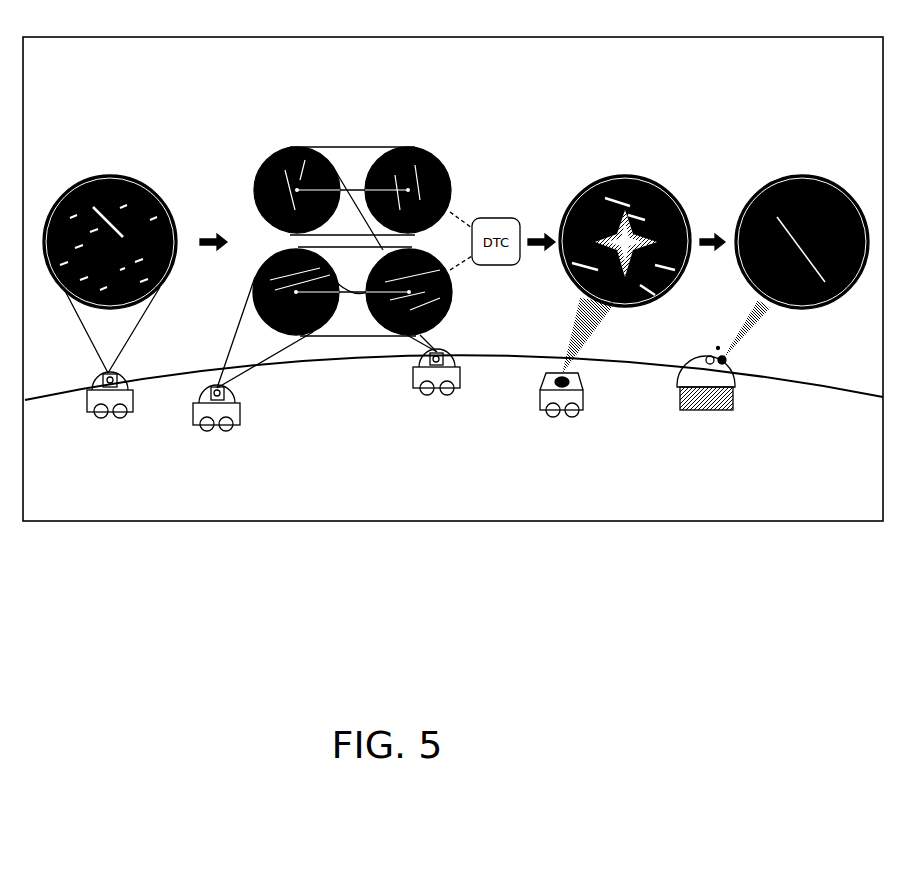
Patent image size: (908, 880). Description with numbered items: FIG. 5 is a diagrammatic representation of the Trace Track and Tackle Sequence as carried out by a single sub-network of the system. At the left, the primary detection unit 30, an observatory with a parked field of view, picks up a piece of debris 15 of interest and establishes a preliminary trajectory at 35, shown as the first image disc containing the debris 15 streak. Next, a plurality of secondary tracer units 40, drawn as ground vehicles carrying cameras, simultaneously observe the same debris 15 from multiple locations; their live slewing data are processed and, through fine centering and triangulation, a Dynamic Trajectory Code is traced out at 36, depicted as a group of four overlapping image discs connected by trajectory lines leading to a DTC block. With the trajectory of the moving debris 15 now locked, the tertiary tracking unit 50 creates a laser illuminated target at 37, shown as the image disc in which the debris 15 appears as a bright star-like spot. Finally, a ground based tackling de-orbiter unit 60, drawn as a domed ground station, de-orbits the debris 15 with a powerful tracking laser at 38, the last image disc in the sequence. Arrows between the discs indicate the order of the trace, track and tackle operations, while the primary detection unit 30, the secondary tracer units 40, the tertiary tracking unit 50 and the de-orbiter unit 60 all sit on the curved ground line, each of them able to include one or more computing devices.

The debris 15 is at (113, 227).
The primary detection unit 30 is at (127, 413).
The preliminary trajectory 35 is at (207, 143).
The Dynamic Trajectory Code tracing stage 36 is at (446, 148).
The laser illuminated target stage 37 is at (658, 164).
The debris de-orbiting stage 38 is at (799, 164).
The secondary tracer unit 40 is at (240, 425).
The tertiary tracking unit 50 is at (583, 410).
The ground based tackling de-orbiter unit 60 is at (707, 410).